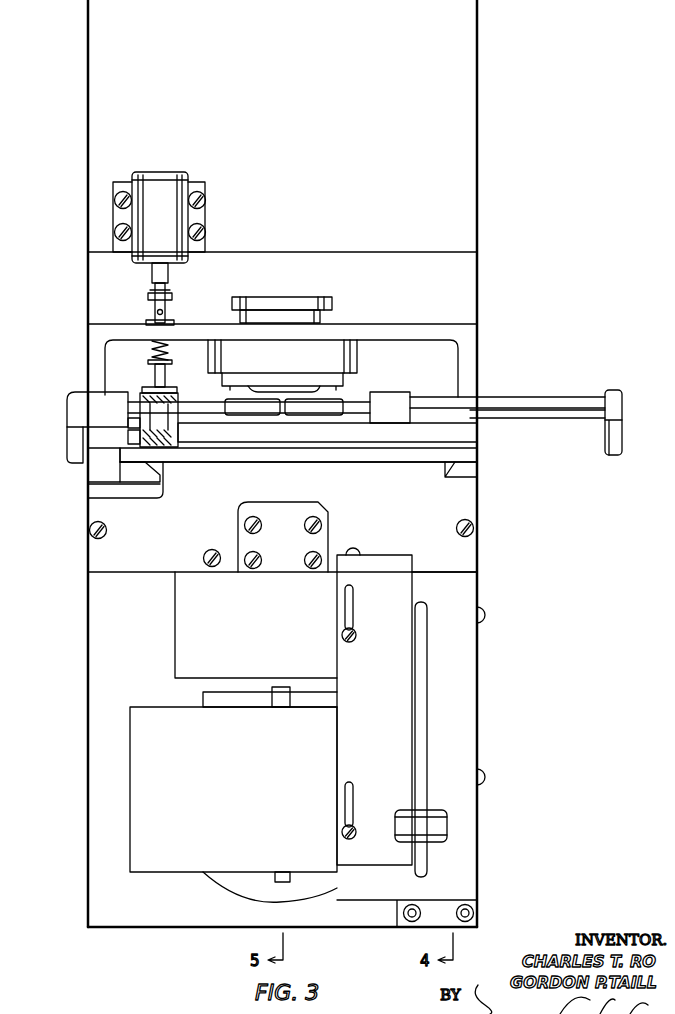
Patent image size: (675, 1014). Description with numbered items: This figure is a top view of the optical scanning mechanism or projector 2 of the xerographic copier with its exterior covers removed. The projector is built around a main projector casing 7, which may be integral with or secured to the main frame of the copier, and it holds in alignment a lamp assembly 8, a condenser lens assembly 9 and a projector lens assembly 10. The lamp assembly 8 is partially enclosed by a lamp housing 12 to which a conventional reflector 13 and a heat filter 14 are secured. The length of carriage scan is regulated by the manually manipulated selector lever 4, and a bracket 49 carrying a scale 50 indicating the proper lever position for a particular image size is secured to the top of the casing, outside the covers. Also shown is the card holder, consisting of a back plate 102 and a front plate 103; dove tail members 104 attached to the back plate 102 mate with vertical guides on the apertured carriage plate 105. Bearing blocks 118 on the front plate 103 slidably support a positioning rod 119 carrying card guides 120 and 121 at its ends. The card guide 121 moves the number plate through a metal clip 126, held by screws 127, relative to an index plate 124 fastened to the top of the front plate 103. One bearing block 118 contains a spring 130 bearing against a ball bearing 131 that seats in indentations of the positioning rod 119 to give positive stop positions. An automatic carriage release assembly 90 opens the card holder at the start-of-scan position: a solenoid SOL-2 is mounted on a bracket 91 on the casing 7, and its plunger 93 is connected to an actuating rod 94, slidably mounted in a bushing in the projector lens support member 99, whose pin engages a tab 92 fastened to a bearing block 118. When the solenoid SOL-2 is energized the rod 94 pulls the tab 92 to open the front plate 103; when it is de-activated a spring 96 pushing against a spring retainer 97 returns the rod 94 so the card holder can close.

The solenoid SOL-2 is at (168, 172).
The bracket 91 is at (205, 196).
The automatic carriage release assembly 90 is at (139, 271).
The solenoid plunger 93 is at (168, 284).
The projector lens support member 99 is at (190, 325).
The projector lens assembly 10 is at (332, 288).
The spring 96 is at (168, 351).
The spring retainer 97 is at (152, 353).
The actuating rod 94 is at (155, 372).
The tab 92 is at (142, 390).
The bearing blocks 118 is at (395, 384).
The ball bearing 131 is at (172, 402).
The spring 130 is at (172, 435).
The card guide 121 is at (67, 408).
The carriage plate 105 is at (72, 457).
The screws 127 is at (130, 424).
The metal clip 126 is at (128, 434).
The positioning rod 119 is at (355, 400).
The index plate 124 is at (390, 407).
The card guide 120 is at (616, 406).
The front plate 103 is at (455, 440).
The back plate 102 is at (483, 453).
The dove tail members 104 is at (95, 472).
The main projector casing 7 is at (88, 600).
The condenser lens assembly 9 is at (161, 617).
The heat filter 14 is at (203, 700).
The lamp housing 12 is at (130, 732).
The lamp assembly 8 is at (121, 765).
The reflector 13 is at (232, 882).
The scale 50 is at (337, 730).
The bracket 49 is at (478, 700).
The optical scanning mechanism or projector 2 is at (490, 645).
The selector lever 4 is at (434, 808).